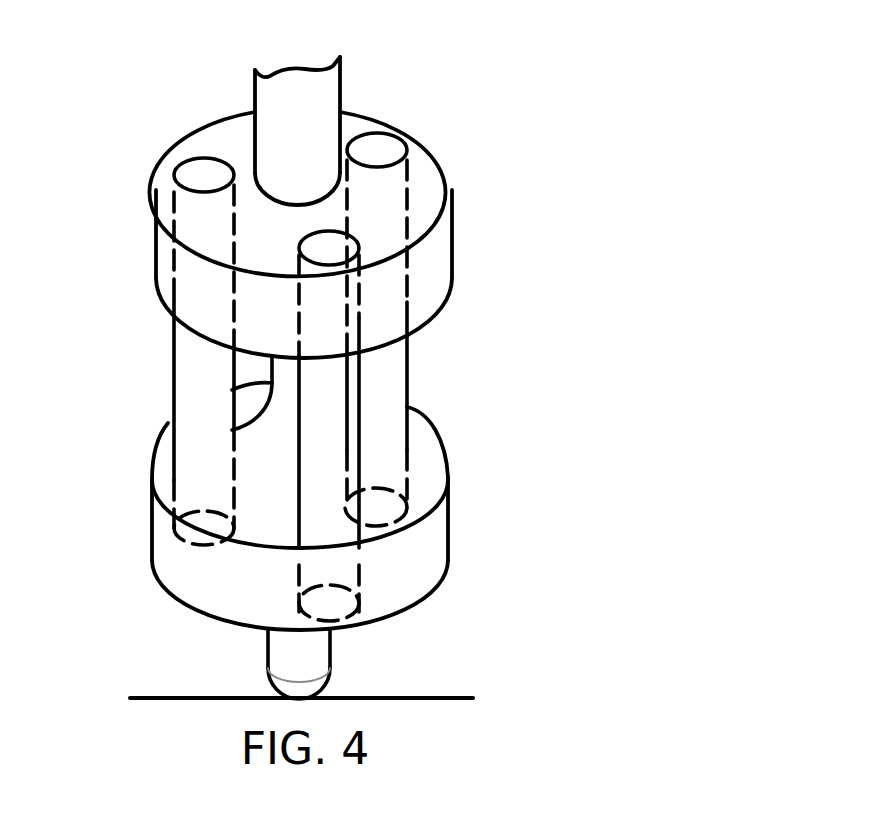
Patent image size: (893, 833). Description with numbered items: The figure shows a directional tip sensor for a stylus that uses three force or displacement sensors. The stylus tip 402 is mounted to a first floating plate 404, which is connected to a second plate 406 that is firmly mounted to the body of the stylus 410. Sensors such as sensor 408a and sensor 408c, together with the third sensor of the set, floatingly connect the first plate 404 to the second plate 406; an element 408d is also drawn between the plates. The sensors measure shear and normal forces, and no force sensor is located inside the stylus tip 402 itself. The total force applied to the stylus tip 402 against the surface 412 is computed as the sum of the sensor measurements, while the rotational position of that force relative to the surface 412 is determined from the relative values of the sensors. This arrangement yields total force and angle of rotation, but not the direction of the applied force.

The stylus tip 402 is at (333, 668).
The first floating plate 404 is at (425, 572).
The second plate 406 is at (435, 248).
The sensor 408a is at (182, 387).
The sensor 408c is at (392, 389).
The support rod 408d is at (333, 455).
The body of the stylus 410 is at (327, 95).
The surface 412 is at (442, 700).